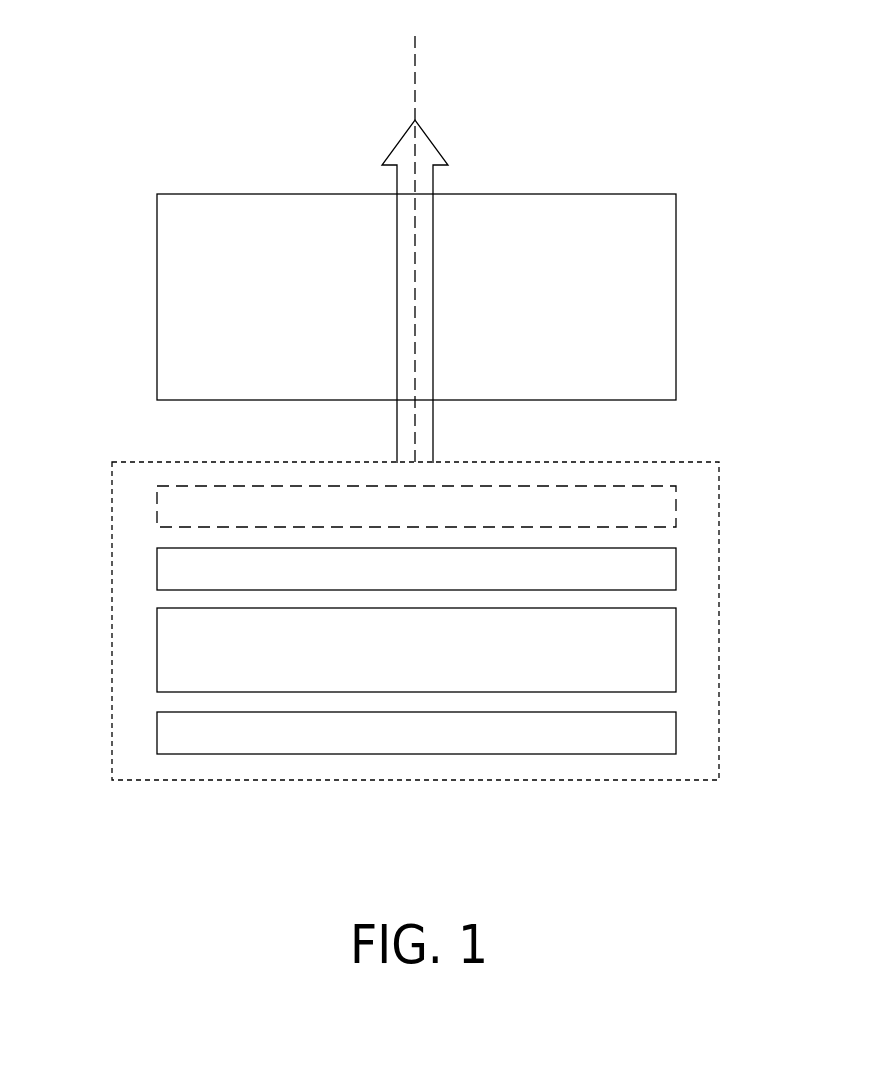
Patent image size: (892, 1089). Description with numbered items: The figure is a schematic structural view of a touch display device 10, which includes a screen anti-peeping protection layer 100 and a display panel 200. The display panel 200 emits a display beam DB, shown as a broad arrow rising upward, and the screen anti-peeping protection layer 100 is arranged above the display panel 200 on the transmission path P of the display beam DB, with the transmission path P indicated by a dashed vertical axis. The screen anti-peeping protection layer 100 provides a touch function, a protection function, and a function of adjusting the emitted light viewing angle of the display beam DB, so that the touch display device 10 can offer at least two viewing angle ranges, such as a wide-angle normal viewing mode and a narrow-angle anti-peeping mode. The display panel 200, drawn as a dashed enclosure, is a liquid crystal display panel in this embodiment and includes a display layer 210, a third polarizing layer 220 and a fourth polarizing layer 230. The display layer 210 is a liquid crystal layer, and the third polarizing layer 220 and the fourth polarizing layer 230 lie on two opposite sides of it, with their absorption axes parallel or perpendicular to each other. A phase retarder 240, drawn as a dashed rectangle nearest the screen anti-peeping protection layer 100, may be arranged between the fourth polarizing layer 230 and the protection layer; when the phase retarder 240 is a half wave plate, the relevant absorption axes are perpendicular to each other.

The touch display device 10 is at (762, 841).
The screen anti-peeping protection layer 100 is at (676, 295).
The display panel 200 is at (719, 650).
The display layer 210 is at (157, 648).
The third polarizing layer 220 is at (157, 731).
The fourth polarizing layer 230 is at (157, 565).
The phase retarder 240 is at (157, 503).
The transmission path P is at (418, 71).
The display beam DB is at (436, 148).